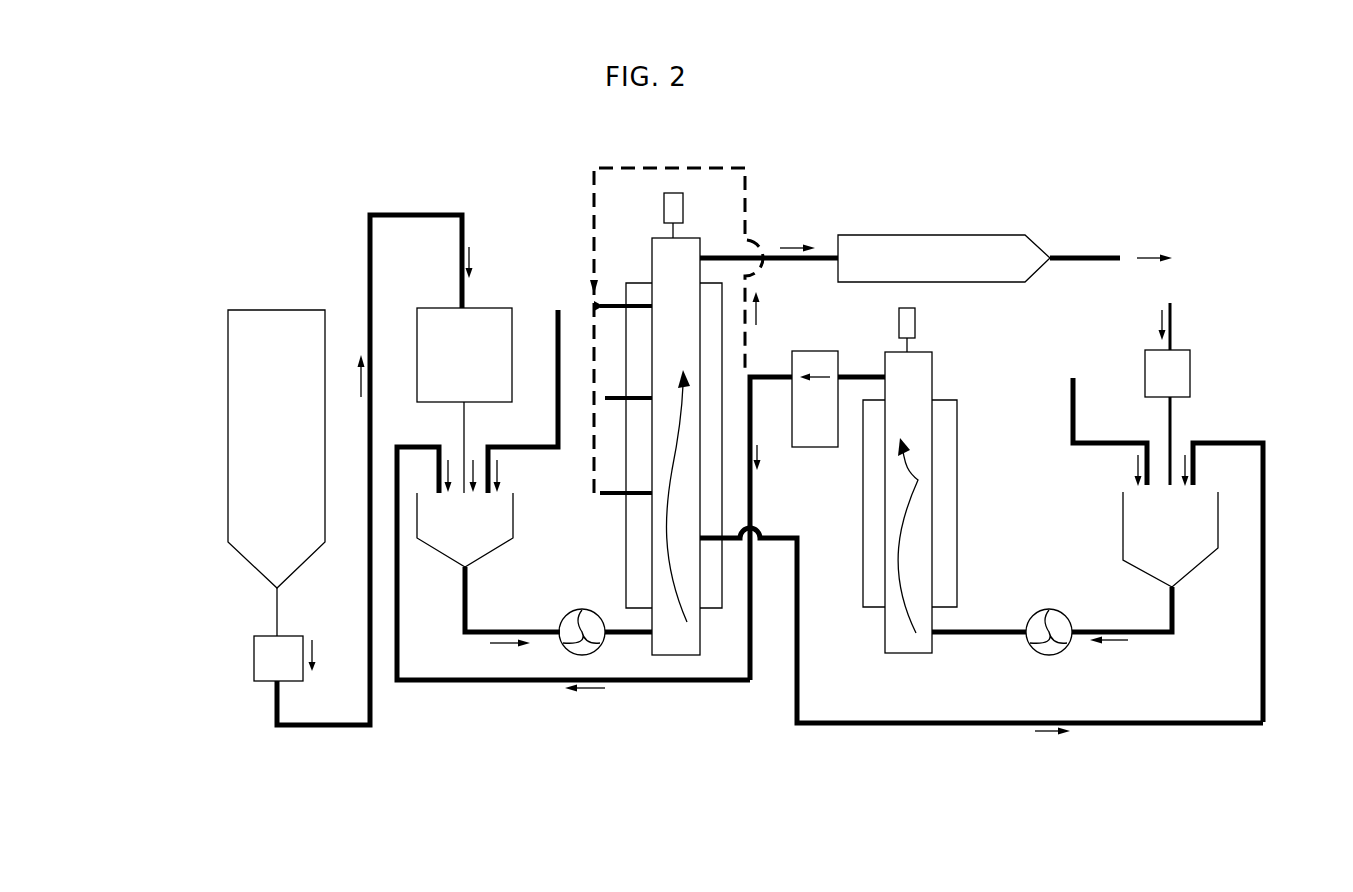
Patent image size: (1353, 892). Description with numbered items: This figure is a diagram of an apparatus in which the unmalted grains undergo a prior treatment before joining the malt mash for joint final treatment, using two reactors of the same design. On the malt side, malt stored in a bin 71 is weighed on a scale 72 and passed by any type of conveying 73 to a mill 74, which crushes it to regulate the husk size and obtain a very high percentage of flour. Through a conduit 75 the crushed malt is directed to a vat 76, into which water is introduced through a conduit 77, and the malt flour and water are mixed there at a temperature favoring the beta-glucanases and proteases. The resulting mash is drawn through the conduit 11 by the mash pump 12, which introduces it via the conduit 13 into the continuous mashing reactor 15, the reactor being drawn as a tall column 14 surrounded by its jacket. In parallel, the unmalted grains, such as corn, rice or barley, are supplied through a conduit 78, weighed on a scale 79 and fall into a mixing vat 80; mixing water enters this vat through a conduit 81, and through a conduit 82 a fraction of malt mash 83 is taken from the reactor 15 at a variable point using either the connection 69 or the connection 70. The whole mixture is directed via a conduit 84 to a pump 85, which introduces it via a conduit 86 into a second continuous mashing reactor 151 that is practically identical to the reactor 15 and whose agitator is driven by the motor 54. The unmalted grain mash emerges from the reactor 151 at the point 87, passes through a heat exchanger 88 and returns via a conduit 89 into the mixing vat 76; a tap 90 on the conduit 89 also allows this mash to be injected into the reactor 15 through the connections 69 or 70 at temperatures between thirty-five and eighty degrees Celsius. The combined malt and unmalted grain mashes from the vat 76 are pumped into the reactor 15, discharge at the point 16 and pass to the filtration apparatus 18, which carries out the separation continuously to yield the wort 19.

The conduit 11 is at (468, 608).
The mash pump 12 is at (566, 615).
The conduit 13 is at (620, 638).
The washing column 14 is at (656, 632).
The continuous mashing reactor 15 is at (662, 597).
The discharge point 16 is at (776, 260).
The filtration apparatus 18 is at (928, 255).
The wort 19 is at (1078, 258).
The motor 54 is at (675, 205).
The connection 69 is at (606, 300).
The connection 70 is at (745, 545).
The bin 71 is at (258, 335).
The scale 72 is at (272, 655).
The conveying 73 is at (315, 727).
The mill 74 is at (483, 330).
The conduit 75 is at (466, 425).
The vat 76 is at (478, 515).
The conduit 77 is at (556, 355).
The conduit 78 is at (1172, 316).
The scale 79 is at (1182, 370).
The mixing vat 80 is at (1195, 550).
The conduit 81 is at (1072, 376).
The conduit 82 is at (1265, 527).
The malt mash 83 is at (700, 530).
The conduit 84 is at (1143, 636).
The pump 85 is at (1050, 645).
The conduit 86 is at (968, 636).
The point 87 is at (860, 377).
The heat exchanger 88 is at (800, 365).
The conduit 89 is at (470, 683).
The tap 90 is at (745, 225).
The second continuous mashing reactor 151 is at (930, 413).